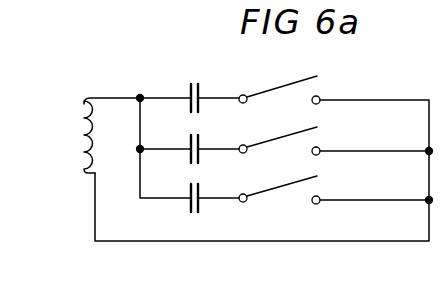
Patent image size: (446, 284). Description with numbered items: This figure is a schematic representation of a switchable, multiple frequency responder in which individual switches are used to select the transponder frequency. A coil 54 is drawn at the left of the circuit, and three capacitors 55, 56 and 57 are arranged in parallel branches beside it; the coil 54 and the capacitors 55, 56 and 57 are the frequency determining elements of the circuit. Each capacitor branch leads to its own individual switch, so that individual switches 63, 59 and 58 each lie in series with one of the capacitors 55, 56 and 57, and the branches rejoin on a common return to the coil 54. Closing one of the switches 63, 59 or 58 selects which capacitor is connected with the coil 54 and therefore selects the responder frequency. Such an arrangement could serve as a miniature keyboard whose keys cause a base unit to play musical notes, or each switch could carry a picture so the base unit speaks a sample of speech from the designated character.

The coil 54 is at (83, 133).
The capacitor 55 is at (192, 80).
The capacitor 56 is at (192, 132).
The capacitor 57 is at (191, 182).
The individual switch 63 is at (278, 93).
The individual switch 59 is at (278, 147).
The individual switch 58 is at (276, 193).